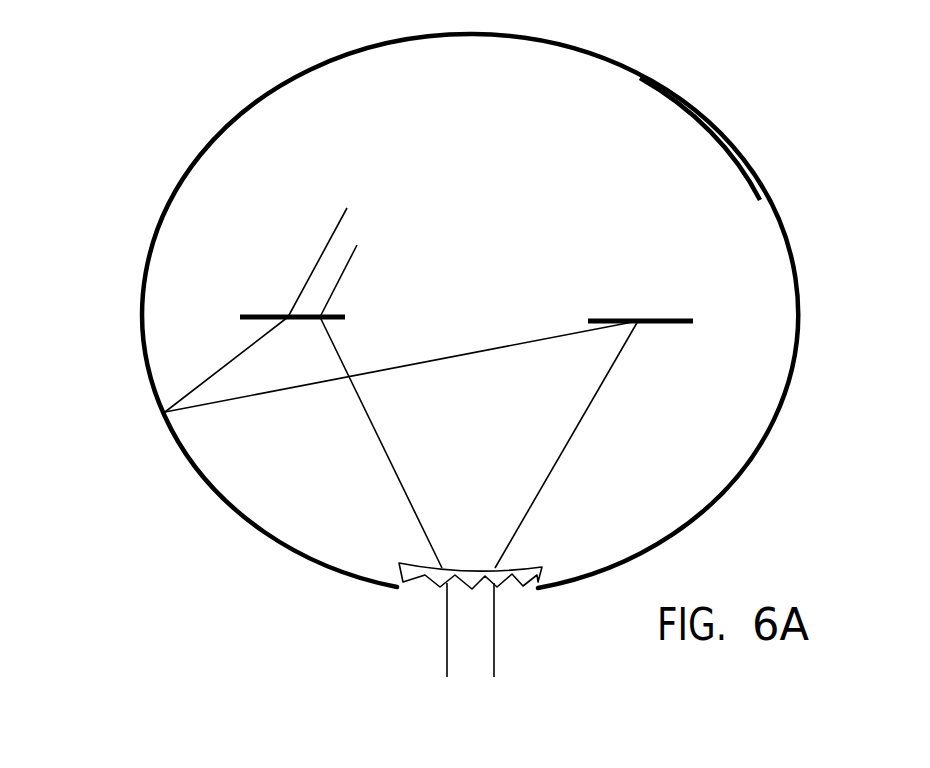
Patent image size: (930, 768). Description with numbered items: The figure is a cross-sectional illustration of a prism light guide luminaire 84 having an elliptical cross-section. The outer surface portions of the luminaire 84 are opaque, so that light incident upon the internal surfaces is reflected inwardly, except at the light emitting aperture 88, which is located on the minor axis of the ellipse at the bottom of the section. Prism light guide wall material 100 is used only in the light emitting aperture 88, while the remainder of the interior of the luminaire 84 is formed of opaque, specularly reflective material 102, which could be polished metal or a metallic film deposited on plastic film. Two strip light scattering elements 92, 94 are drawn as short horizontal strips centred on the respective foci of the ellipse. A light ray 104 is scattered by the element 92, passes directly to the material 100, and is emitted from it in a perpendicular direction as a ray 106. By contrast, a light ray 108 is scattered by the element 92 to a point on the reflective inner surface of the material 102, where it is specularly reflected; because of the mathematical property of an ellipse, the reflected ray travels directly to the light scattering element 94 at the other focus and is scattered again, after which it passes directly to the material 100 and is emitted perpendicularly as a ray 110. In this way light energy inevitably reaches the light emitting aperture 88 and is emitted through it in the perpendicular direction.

The prism light guide luminaire 84 is at (127, 222).
The specularly reflective material 102 is at (690, 109).
The light scattering element 92 is at (340, 317).
The light scattering element 94 is at (598, 319).
The light ray 108 is at (271, 296).
The light ray 104 is at (381, 396).
The prism light guide wall material 100 is at (527, 565).
The light emitting aperture 88 is at (500, 639).
The ray 106 is at (420, 639).
The ray 110 is at (507, 638).